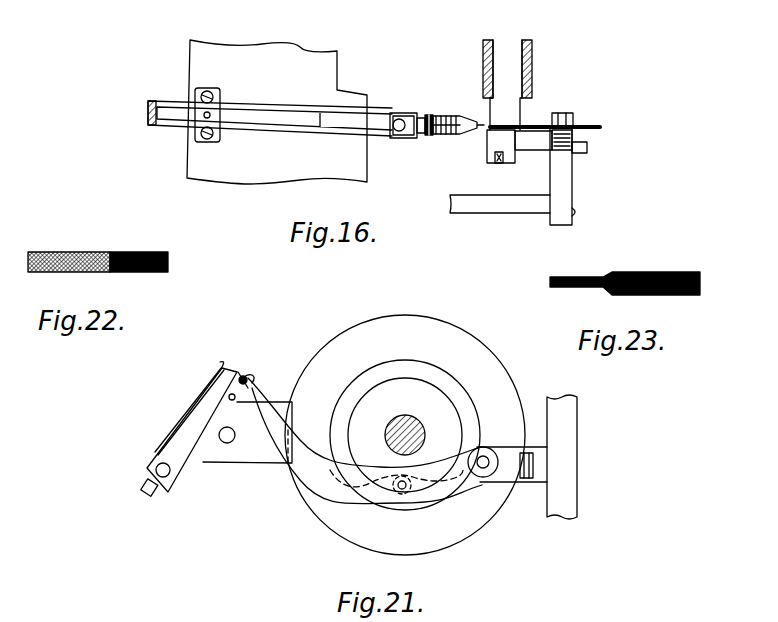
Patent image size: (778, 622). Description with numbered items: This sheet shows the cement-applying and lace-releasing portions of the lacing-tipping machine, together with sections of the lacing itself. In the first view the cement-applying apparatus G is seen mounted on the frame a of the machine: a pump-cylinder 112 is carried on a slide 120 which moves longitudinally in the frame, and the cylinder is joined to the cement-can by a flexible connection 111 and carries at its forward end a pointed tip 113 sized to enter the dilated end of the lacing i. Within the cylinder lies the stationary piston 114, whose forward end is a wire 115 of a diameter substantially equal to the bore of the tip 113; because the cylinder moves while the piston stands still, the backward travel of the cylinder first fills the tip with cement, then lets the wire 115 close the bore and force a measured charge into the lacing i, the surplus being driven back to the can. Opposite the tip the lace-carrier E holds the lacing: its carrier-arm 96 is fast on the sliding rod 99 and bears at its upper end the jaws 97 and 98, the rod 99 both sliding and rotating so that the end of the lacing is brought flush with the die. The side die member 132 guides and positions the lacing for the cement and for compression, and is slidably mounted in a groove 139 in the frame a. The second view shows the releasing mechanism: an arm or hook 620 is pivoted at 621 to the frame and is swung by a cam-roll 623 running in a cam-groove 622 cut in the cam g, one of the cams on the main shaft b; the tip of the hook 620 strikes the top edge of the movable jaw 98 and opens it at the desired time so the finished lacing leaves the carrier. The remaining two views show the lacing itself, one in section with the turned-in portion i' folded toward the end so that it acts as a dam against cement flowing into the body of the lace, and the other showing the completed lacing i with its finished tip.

In FIG. 16, the frame of the machine a is at (213, 72).
In FIG. 16, the piston 114 is at (278, 116).
In FIG. 16, the slide 120 is at (178, 128).
In FIG. 16, the pump-cylinder 112 is at (373, 122).
In FIG. 16, the flexible connection 111 is at (399, 118).
In FIG. 16, the cement-applying apparatus G is at (433, 113).
In FIG. 16, the tip 113 is at (474, 121).
In FIG. 16, the wire 115 is at (442, 129).
In FIG. 16, the side die member 132 is at (502, 145).
In FIG. 16, the groove 139 is at (497, 165).
In FIG. 16, the lacing i is at (545, 103).
In FIG. 22, the lacing i is at (139, 243).
In FIG. 23, the lacing i is at (625, 269).
In FIG. 21, the lacing i is at (263, 353).
In FIG. 22, the turned-in portion of the lacing i' is at (69, 241).
In FIG. 16, the carrier-arm 96 is at (560, 168).
In FIG. 16, the lace-carrier E is at (578, 181).
In FIG. 21, the lace-carrier E is at (197, 423).
In FIG. 16, the movable jaw 98 is at (575, 127).
In FIG. 21, the movable jaw 98 is at (251, 381).
In FIG. 16, the jaw 97 is at (580, 133).
In FIG. 21, the jaw 97 is at (244, 376).
In FIG. 16, the sliding rod 99 is at (512, 217).
In FIG. 21, the cam g is at (424, 322).
In FIG. 21, the cam-groove 622 is at (387, 375).
In FIG. 21, the main shaft b is at (421, 422).
In FIG. 21, the arm or hook 620 is at (313, 467).
In FIG. 21, the pivot 621 is at (484, 465).
In FIG. 21, the cam-roll 623 is at (398, 490).